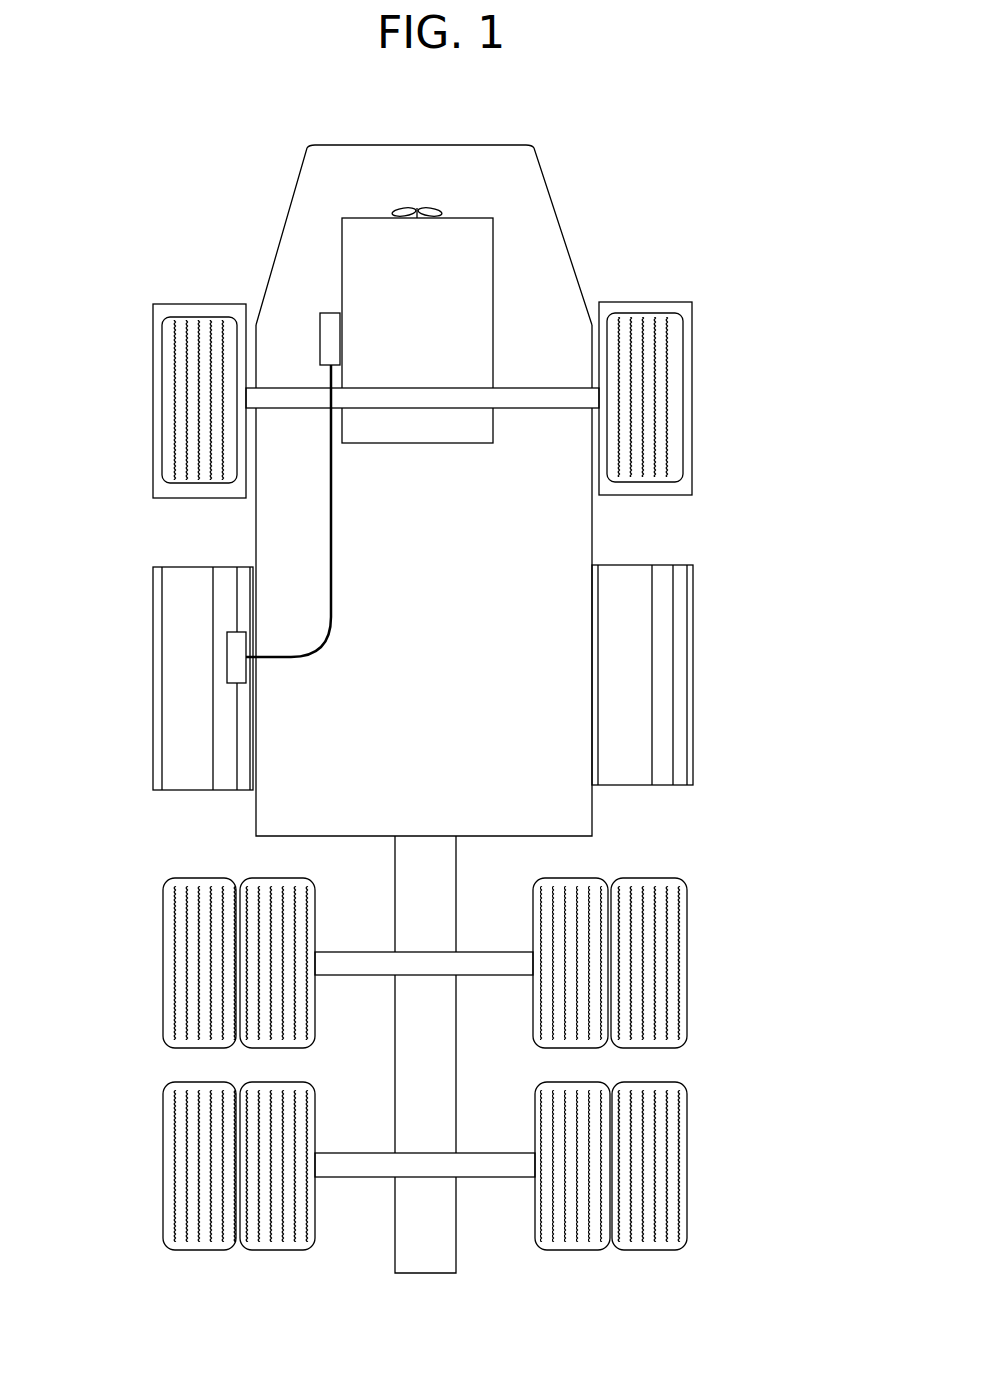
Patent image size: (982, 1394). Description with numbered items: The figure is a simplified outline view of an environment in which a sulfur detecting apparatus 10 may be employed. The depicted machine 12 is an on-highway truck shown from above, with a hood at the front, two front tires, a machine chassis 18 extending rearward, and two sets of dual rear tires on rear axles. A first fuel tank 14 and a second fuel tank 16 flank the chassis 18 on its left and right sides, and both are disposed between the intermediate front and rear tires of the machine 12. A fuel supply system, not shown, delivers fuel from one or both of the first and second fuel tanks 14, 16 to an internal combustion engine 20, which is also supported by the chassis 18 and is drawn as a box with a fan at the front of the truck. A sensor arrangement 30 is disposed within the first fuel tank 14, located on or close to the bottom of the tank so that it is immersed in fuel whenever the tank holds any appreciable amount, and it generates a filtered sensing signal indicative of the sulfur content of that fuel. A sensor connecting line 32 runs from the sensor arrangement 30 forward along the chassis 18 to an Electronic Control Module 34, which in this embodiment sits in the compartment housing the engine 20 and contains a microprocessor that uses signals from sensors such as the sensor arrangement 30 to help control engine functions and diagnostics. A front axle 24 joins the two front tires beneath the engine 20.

The sulfur detecting apparatus 10 is at (130, 556).
The machine 12 is at (645, 535).
The first fuel tank 14 is at (153, 755).
The second fuel tank 16 is at (693, 688).
The machine chassis 18 is at (592, 812).
The internal combustion engine 20 is at (493, 285).
The front axle 24 is at (256, 500).
The sensor arrangement 30 is at (227, 657).
The sensor connecting line 32 is at (330, 517).
The Electronic Control Module 34 is at (328, 313).